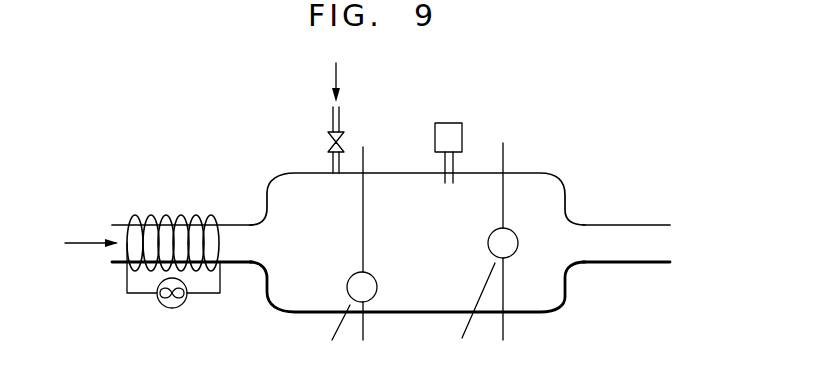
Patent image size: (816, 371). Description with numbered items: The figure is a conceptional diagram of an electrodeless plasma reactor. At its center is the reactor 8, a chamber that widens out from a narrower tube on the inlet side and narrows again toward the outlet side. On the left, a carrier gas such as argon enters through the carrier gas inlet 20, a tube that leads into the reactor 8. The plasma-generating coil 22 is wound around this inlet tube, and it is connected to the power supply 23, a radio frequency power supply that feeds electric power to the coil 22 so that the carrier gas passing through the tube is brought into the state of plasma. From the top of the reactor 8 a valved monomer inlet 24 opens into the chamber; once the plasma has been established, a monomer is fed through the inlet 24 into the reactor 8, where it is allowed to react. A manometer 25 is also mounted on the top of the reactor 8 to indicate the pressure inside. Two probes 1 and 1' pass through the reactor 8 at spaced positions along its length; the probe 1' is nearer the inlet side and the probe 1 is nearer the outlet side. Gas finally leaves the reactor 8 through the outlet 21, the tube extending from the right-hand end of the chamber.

The reactor 8 is at (453, 313).
The carrier gas inlet 20 is at (112, 230).
The outlet 21 is at (663, 233).
The plasma-generating coil 22 is at (184, 215).
The power supply 23 is at (175, 308).
The monomer inlet 24 is at (330, 118).
The manometer 25 is at (440, 123).
The probe 1 is at (492, 241).
The probe 1' is at (348, 242).